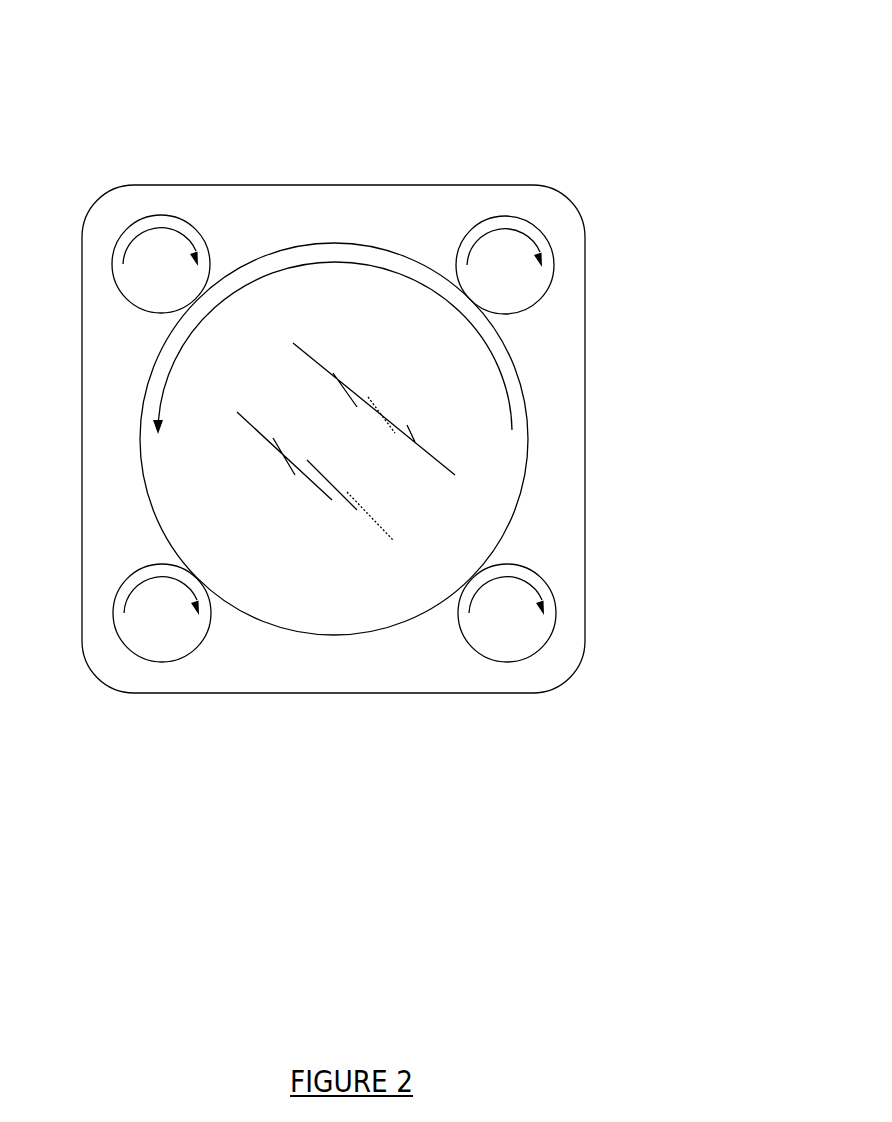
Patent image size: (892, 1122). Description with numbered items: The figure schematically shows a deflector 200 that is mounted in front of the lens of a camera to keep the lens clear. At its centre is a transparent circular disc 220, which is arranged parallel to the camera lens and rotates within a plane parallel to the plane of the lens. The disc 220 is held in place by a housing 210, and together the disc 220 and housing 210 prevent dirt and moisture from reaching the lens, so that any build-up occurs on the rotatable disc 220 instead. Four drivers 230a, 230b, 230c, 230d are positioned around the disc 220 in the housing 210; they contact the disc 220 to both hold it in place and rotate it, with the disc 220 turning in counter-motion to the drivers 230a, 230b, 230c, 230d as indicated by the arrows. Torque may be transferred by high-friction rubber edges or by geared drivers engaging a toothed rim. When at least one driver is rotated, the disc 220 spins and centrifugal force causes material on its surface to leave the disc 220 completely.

The deflector 200 is at (426, 82).
The housing 210 is at (508, 185).
The transparent disc 220 is at (150, 372).
The driver 230a is at (118, 242).
The driver 230b is at (547, 238).
The driver 230c is at (120, 590).
The driver 230d is at (550, 587).